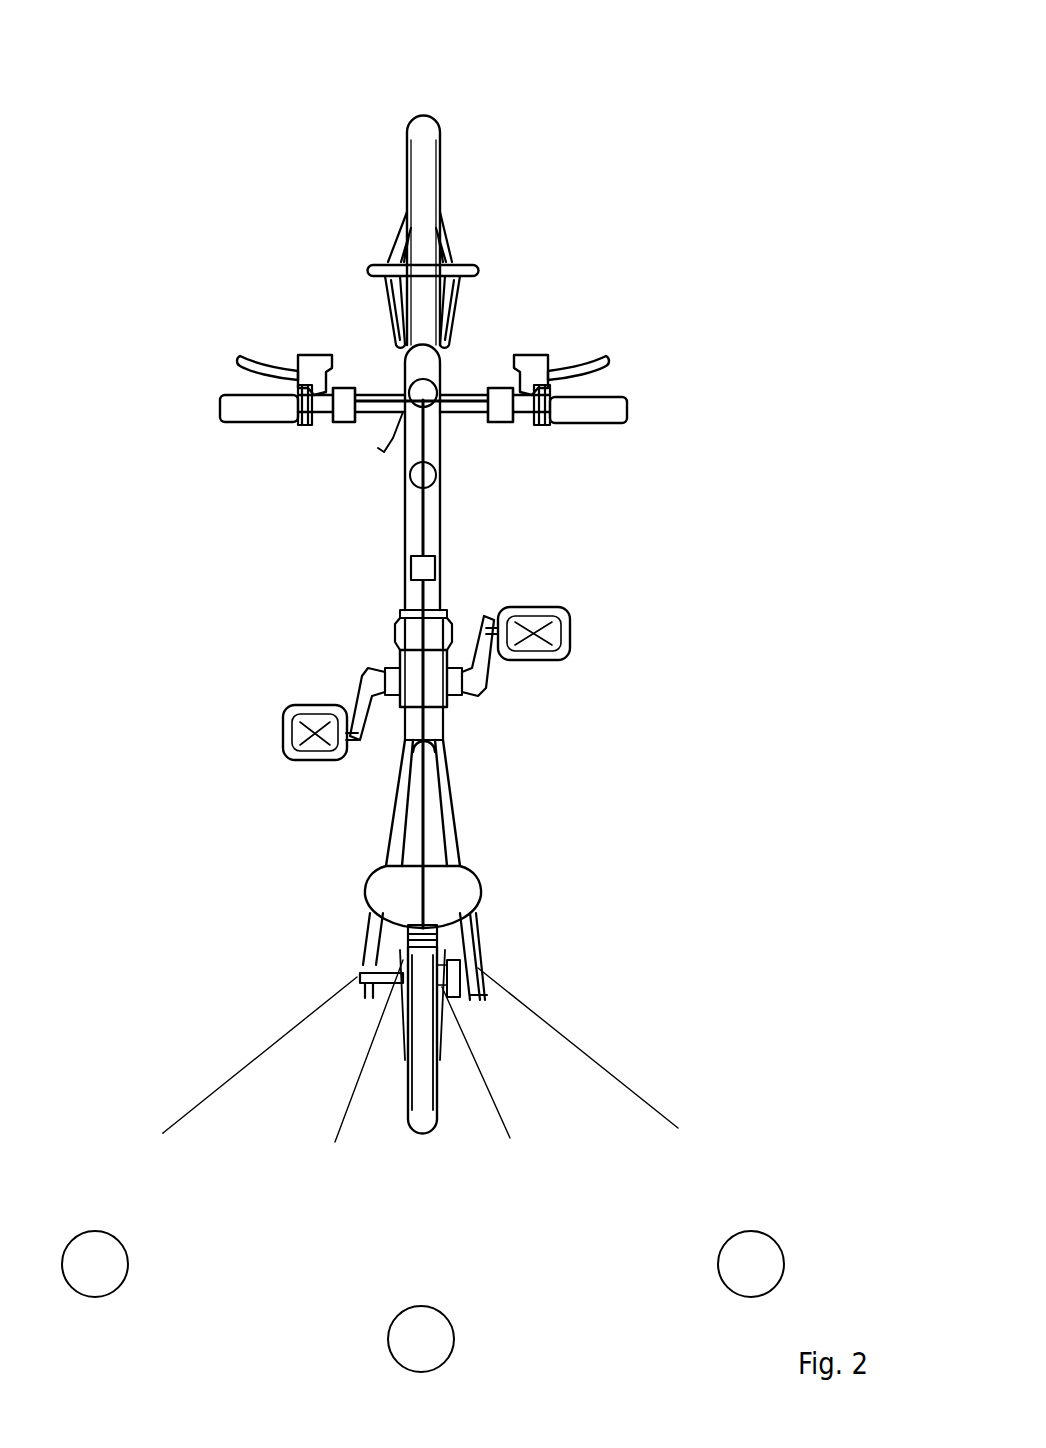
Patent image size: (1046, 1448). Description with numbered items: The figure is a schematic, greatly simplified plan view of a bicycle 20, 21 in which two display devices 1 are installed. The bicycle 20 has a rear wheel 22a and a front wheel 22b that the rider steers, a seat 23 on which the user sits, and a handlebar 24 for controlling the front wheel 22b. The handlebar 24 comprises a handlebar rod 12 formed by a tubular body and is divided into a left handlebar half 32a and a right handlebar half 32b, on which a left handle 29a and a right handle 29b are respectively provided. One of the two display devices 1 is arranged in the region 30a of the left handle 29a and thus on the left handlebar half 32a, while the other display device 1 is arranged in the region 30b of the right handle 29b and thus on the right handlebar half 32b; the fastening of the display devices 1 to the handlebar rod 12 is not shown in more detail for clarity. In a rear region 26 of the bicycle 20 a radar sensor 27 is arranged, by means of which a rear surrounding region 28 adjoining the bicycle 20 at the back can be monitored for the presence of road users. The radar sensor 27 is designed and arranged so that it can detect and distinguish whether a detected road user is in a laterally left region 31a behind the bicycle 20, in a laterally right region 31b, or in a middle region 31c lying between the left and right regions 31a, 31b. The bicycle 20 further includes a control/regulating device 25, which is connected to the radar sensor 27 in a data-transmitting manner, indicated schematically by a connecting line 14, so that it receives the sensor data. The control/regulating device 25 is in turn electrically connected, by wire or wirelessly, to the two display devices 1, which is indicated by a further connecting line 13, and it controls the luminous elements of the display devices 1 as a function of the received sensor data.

The display device 1 is at (345, 418).
The handlebar rod 12 is at (424, 347).
The connecting line 13 is at (373, 407).
The connecting line 14 is at (427, 790).
The bicycle 20 is at (456, 611).
The two-wheeled vehicle 21 is at (617, 182).
The rear wheel 22a is at (427, 1122).
The front wheel 22b is at (418, 122).
The seat 23 is at (465, 890).
The handlebar 24 is at (465, 392).
The control/regulating device 25 is at (428, 568).
The rear region 26 is at (497, 932).
The radar sensor 27 is at (455, 972).
The rear surrounding region 28 is at (564, 1284).
The left handle 29a is at (228, 410).
The right handle 29b is at (625, 411).
The region of the left handle 30a is at (313, 348).
The region of the right handle 30b is at (533, 348).
The laterally left region 31a is at (112, 1276).
The laterally right region 31b is at (767, 1276).
The middle region 31c is at (436, 1351).
The left handlebar half 32a is at (318, 420).
The right handlebar half 32b is at (528, 420).